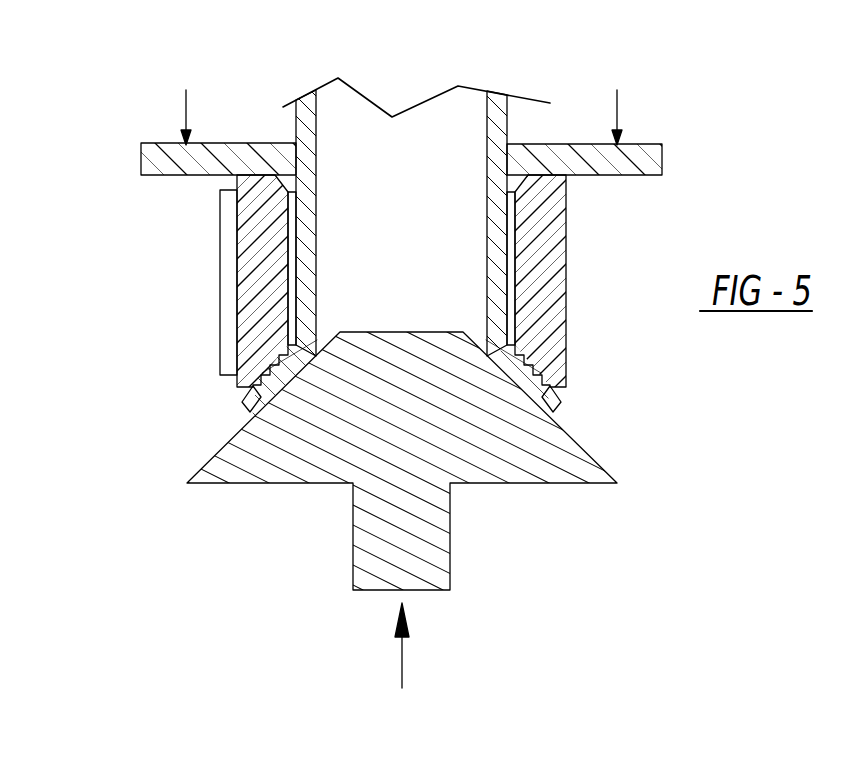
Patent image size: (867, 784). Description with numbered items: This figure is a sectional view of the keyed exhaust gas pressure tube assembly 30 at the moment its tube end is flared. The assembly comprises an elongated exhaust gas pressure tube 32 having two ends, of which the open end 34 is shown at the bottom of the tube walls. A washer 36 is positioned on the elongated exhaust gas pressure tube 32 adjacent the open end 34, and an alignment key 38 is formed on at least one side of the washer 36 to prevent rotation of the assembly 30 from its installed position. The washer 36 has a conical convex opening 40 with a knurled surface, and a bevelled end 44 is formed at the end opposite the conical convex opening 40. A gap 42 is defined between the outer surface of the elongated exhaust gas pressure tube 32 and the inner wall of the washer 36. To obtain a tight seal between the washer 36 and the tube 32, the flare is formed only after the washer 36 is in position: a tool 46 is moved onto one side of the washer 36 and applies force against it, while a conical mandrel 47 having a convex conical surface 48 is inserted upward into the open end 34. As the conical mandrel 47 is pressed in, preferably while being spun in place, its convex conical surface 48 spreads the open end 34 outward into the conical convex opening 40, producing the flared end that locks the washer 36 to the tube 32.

The exhaust gas pressure tube assembly 30 is at (122, 98).
The elongated exhaust gas pressure tube 32 is at (500, 122).
The open end 34 is at (560, 397).
The washer 36 is at (552, 292).
The alignment key 38 is at (222, 290).
The conical convex opening 40 is at (242, 405).
The gap 42 is at (293, 240).
The bevelled end 44 is at (292, 178).
The tool 46 is at (647, 157).
The conical mandrel 47 is at (503, 470).
The convex conical surface 48 is at (230, 440).